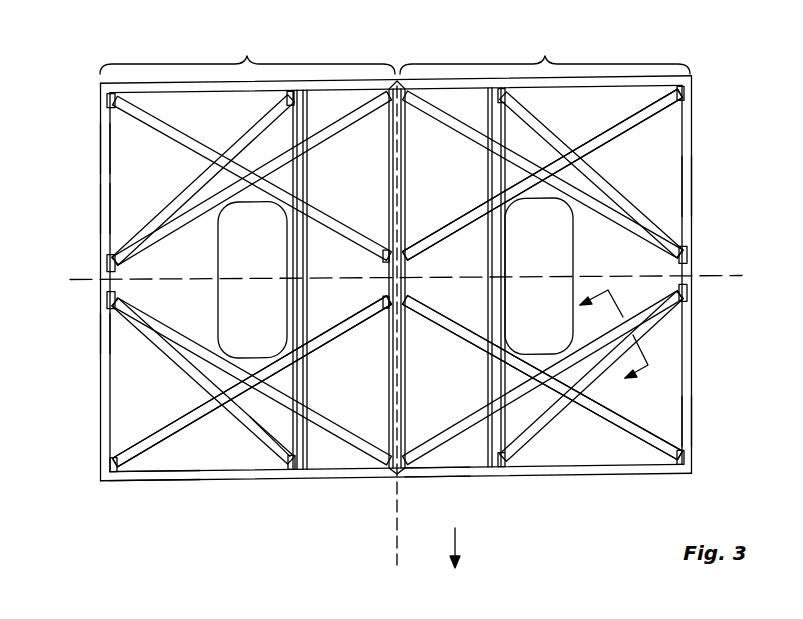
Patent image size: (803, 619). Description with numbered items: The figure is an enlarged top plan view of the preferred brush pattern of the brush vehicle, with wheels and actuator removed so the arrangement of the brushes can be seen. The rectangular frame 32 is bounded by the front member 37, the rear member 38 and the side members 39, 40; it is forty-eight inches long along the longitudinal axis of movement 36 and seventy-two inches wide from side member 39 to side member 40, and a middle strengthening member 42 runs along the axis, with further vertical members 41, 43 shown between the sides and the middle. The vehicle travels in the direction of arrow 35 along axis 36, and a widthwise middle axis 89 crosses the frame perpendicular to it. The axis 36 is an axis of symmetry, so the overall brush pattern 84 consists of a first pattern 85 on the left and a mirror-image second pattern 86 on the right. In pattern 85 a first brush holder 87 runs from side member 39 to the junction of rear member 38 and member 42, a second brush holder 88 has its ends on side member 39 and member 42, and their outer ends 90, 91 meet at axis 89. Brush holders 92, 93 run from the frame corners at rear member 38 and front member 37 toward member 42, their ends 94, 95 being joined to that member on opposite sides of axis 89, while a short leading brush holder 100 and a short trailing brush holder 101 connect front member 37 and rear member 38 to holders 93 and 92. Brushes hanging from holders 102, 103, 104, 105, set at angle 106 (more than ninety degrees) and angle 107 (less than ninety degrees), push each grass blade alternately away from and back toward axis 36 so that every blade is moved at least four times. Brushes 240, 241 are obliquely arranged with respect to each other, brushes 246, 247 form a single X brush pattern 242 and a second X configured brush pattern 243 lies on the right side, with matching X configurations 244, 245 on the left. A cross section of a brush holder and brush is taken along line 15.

The section line and viewing arrows 15 is at (625, 334).
The rectangular frame 32 is at (100, 178).
The arrow 35 is at (460, 546).
The axis of movement 36 is at (395, 548).
The front member 37 is at (590, 478).
The rear member 38 is at (333, 80).
The side member 39 is at (100, 201).
The side member 40 is at (690, 186).
The left post 41 is at (292, 460).
The middle strengthening member 42 is at (390, 466).
The right post 43 is at (505, 461).
The brush pattern 84 is at (174, 450).
The first pattern 85 is at (247, 46).
The second pattern 86 is at (545, 46).
The first brush holder 87 is at (167, 227).
The second brush holder 88 is at (197, 340).
The widthwise middle axis 89 is at (75, 276).
The outer end 90 is at (106, 248).
The outer end 91 is at (107, 305).
The brush holder 92 is at (107, 143).
The brush holder 93 is at (177, 420).
The end of brush holder 92 94 is at (106, 92).
The end of brush holder 93 95 is at (107, 462).
The short leading brush holder 100 is at (250, 440).
The short trailing brush holder 101 is at (250, 122).
The brush holder 102 is at (468, 422).
The brush holder 103 is at (423, 311).
The brush holder 104 is at (475, 210).
The brush holder 105 is at (472, 137).
The angle 106 is at (427, 469).
The angle 107 is at (457, 338).
The brush 240 is at (312, 352).
The brush 241 is at (112, 325).
The X brush pattern 242 is at (692, 426).
The X configured brush pattern 243 is at (562, 173).
The X configuration 244 is at (272, 178).
The X configuration 245 is at (217, 382).
The brush 246 is at (672, 475).
The brush 247 is at (688, 320).